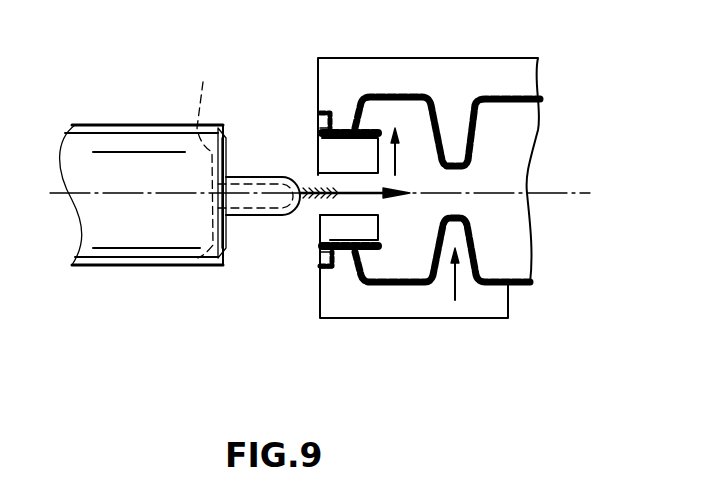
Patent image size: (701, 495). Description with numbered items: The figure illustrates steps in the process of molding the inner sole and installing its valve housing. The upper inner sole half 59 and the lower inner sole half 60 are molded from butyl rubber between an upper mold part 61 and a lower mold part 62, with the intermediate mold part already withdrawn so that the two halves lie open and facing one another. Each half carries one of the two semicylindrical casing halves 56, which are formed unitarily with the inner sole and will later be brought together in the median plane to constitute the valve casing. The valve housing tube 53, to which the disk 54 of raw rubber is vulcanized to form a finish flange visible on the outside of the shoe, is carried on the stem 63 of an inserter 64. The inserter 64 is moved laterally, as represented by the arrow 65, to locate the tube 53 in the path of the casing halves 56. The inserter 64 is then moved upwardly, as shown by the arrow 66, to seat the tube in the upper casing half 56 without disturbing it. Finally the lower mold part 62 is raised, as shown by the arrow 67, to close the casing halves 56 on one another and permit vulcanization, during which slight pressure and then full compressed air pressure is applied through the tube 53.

The valve housing tube 53 is at (255, 176).
The disk of raw rubber 54 is at (207, 157).
The semicylindrical casing halves 56 is at (325, 160).
The upper inner sole half 59 is at (506, 104).
The lower inner sole half 60 is at (482, 270).
The upper mold part 61 is at (316, 75).
The lower mold part 62 is at (320, 290).
The stem 63 is at (255, 216).
The inserter 64 is at (133, 127).
The arrow 65 is at (362, 196).
The arrow 66 is at (398, 160).
The arrow 67 is at (447, 290).